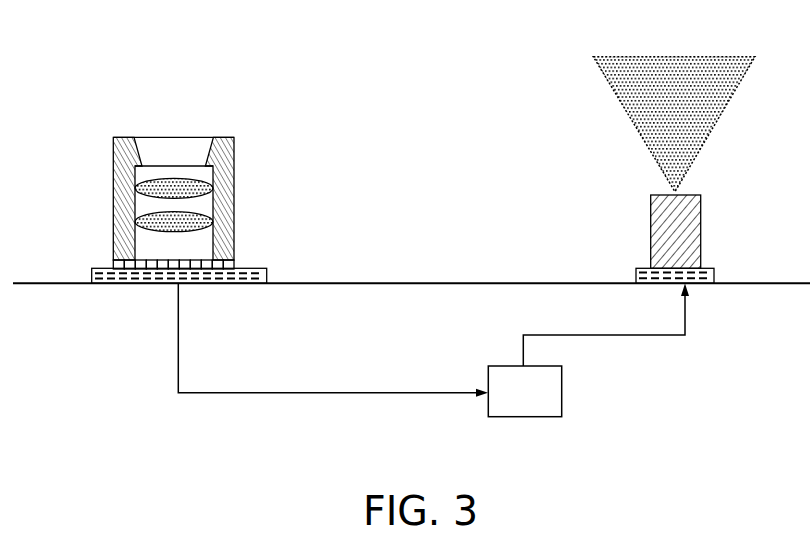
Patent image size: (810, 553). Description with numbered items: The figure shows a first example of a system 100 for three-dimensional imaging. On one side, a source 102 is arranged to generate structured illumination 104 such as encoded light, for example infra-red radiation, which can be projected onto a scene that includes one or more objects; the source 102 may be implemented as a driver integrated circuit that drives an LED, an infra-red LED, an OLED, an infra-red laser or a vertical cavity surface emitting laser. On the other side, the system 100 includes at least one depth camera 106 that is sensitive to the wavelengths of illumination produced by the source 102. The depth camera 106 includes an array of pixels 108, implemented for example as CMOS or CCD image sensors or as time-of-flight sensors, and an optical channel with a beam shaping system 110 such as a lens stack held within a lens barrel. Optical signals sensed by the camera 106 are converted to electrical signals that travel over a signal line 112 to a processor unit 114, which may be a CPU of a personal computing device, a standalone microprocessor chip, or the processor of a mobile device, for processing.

The system for three-dimensional imaging 100 is at (86, 96).
The source 102 is at (702, 235).
The structured illumination 104 is at (735, 90).
The depth camera 106 is at (87, 264).
The array of pixels 108 is at (193, 259).
The beam shaping system 110 is at (235, 197).
The signal line 112 is at (177, 370).
The processor unit 114 is at (533, 417).